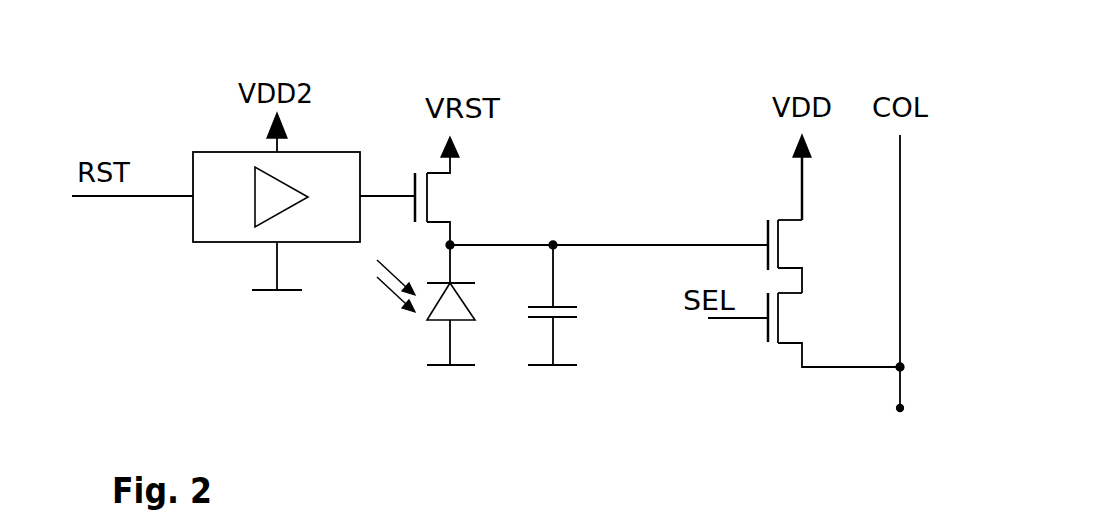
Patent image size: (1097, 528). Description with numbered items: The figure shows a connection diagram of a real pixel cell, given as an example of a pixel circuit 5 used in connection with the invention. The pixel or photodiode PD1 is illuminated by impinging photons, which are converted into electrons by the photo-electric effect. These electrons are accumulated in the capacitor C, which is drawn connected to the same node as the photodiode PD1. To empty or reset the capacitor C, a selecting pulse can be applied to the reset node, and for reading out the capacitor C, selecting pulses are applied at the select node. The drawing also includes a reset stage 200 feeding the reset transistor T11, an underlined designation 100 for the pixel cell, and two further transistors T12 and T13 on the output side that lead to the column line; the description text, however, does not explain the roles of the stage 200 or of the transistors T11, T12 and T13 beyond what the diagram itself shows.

The pixel circuit 5 is at (669, 128).
The pixel circuit 100 is at (622, 103).
The reset amplifier circuit 200 is at (188, 167).
The reset transistor T11 is at (435, 202).
The source follower transistor T12 is at (790, 250).
The select transistor T13 is at (790, 323).
The photodiode PD1 is at (423, 328).
The capacitor C is at (569, 305).